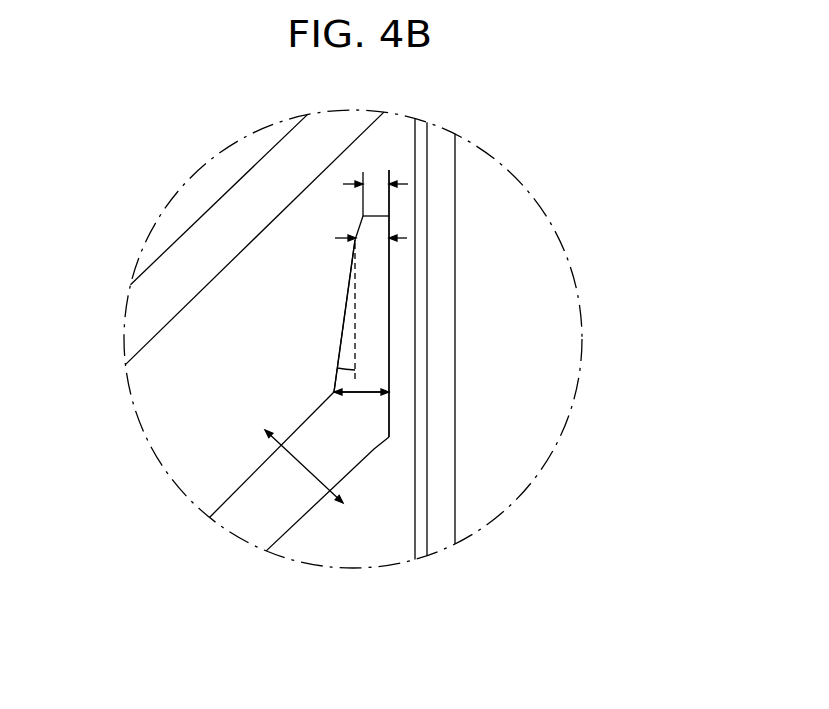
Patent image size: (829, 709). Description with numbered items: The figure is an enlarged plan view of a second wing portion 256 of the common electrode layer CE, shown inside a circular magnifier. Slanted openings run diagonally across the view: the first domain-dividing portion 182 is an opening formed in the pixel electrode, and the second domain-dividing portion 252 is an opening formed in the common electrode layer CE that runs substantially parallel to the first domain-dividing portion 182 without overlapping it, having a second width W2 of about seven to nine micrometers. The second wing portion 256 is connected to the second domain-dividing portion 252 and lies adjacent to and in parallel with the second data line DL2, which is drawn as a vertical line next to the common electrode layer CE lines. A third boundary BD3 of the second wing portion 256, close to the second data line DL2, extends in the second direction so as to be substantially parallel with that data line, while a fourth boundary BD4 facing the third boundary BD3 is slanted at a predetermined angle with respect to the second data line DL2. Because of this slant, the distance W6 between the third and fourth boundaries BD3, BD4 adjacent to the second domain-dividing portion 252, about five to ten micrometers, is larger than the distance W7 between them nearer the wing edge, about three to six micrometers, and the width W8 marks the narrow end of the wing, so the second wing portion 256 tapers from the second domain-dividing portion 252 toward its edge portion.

The first domain-dividing portion 182 is at (140, 334).
The second domain-dividing portion 252 is at (268, 514).
The second wing portion 256 is at (371, 329).
The third boundary BD3 is at (389, 283).
The fourth boundary BD4 is at (338, 357).
The common electrode layer CE is at (367, 537).
The second data line DL2 is at (438, 520).
The width W8 is at (375, 173).
The distance between third and fourth boundaries adjacent to the second wing portion W7 is at (371, 253).
The distance between third and fourth boundaries adjacent to the second domain-divid W6 is at (361, 405).
The second width W2 is at (304, 466).